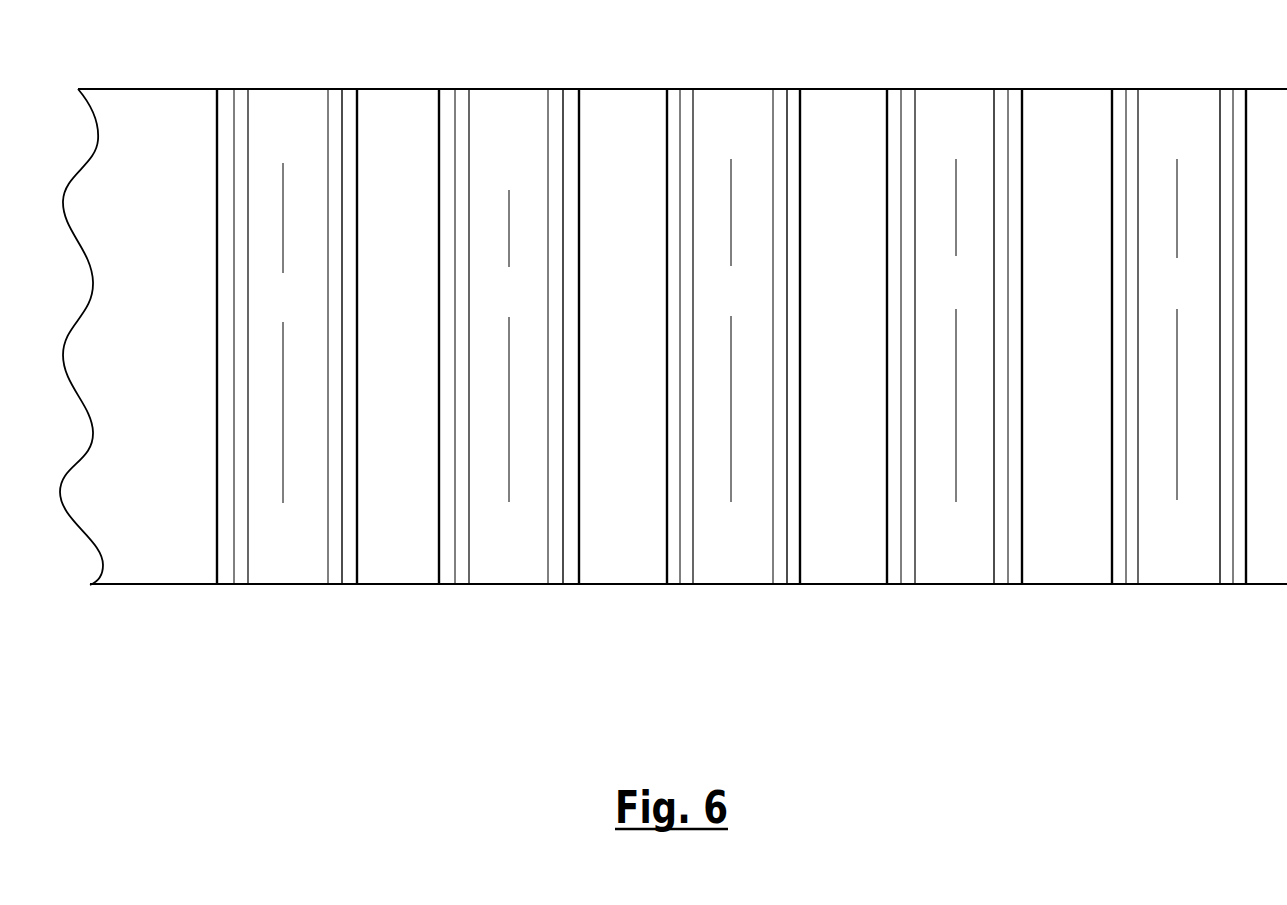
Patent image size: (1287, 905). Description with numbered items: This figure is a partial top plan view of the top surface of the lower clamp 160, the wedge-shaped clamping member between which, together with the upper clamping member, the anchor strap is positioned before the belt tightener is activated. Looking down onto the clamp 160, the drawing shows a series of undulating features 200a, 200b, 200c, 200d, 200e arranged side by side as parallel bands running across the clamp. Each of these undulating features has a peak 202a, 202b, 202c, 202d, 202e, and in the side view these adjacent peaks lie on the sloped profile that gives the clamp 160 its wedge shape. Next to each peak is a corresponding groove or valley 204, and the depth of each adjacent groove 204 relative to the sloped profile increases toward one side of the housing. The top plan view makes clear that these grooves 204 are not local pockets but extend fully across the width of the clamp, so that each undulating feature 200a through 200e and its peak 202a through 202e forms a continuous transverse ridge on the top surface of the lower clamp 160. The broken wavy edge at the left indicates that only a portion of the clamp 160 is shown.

The lower clamp 160 is at (738, 587).
The undulating feature 200a is at (320, 313).
The undulating feature 200b is at (542, 304).
The undulating feature 200c is at (765, 308).
The undulating feature 200d is at (988, 296).
The undulating feature 200e is at (1212, 300).
The peak 202a is at (247, 132).
The peak 202b is at (469, 126).
The peak 202c is at (692, 130).
The peak 202d is at (911, 127).
The peak 202e is at (1139, 115).
The groove 204 is at (288, 547).